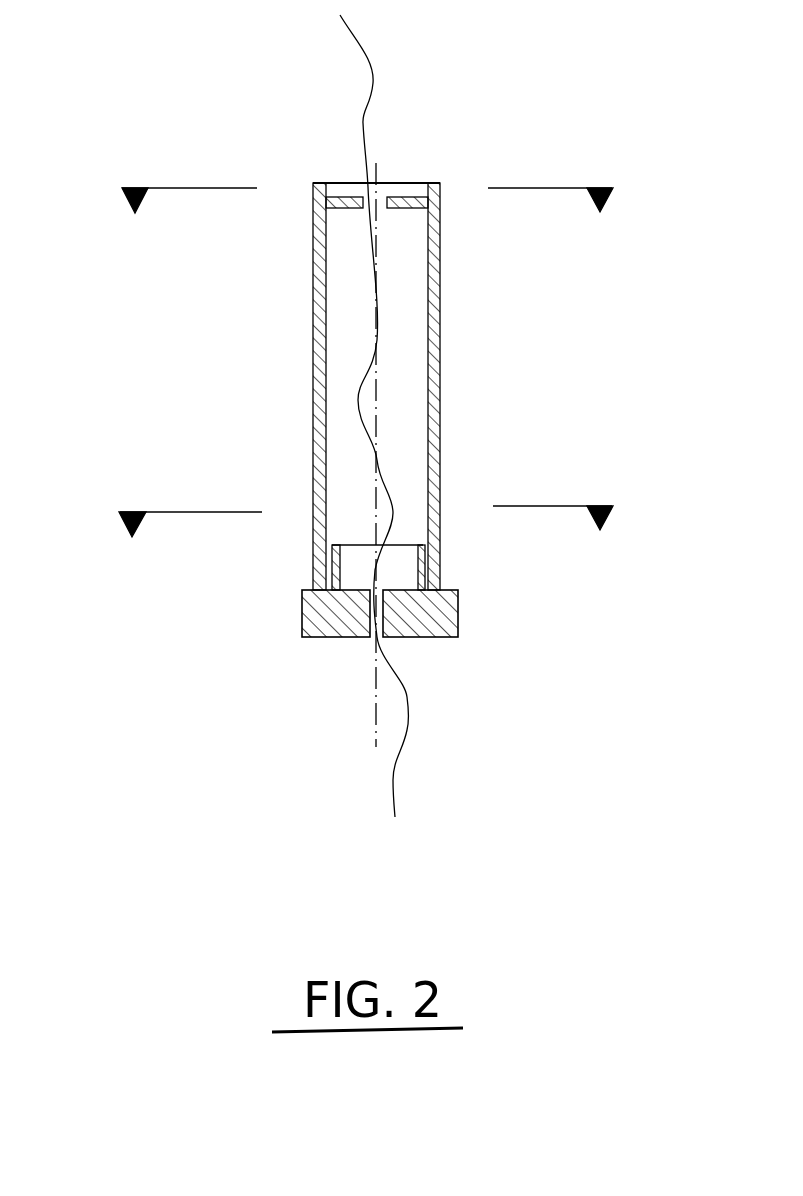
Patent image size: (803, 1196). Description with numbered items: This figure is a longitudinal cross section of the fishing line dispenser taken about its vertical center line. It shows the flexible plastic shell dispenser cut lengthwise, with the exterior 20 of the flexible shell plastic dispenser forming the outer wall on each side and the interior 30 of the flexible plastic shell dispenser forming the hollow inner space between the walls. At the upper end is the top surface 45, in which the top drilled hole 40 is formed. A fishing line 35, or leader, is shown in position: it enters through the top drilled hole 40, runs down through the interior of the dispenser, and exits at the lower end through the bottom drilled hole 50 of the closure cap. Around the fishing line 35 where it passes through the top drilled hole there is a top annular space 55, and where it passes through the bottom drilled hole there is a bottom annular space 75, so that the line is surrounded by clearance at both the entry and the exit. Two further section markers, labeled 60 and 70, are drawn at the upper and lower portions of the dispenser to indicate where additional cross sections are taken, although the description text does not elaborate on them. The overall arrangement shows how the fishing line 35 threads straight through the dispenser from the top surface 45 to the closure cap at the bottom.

The exterior of the flexible shell plastic dispenser 20 is at (327, 312).
The interior of the flexible plastic shell dispenser 30 is at (313, 312).
The fishing line 35 is at (362, 62).
The top drilled hole 40 is at (430, 119).
The top surface 45 is at (457, 147).
The top annular space 55 is at (368, 193).
The bottom drilled hole 50 is at (361, 667).
The section line 60 is at (368, 195).
The section line 70 / inner plug 70 is at (368, 535).
The bottom annular space 75 is at (421, 666).